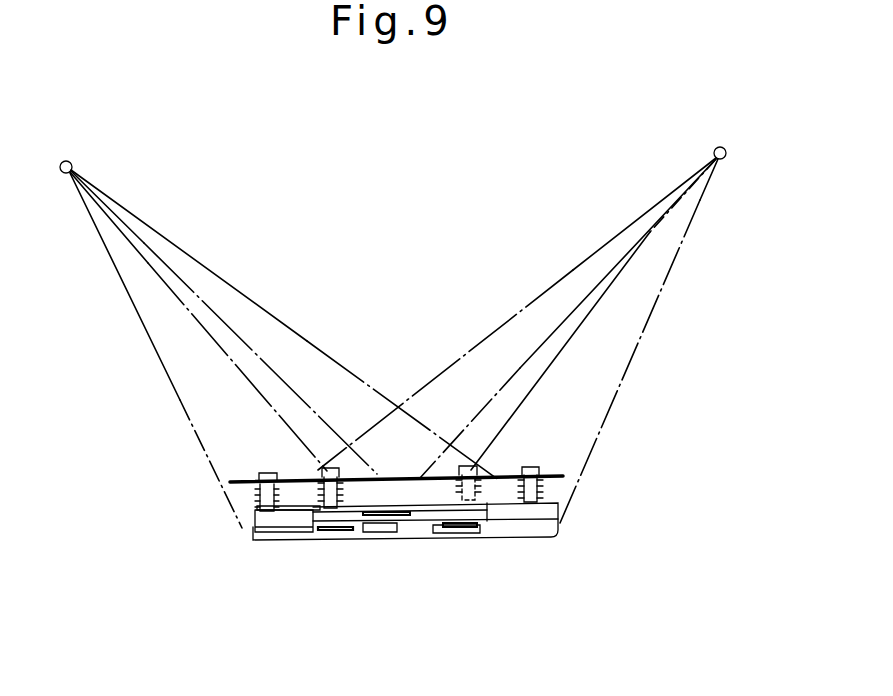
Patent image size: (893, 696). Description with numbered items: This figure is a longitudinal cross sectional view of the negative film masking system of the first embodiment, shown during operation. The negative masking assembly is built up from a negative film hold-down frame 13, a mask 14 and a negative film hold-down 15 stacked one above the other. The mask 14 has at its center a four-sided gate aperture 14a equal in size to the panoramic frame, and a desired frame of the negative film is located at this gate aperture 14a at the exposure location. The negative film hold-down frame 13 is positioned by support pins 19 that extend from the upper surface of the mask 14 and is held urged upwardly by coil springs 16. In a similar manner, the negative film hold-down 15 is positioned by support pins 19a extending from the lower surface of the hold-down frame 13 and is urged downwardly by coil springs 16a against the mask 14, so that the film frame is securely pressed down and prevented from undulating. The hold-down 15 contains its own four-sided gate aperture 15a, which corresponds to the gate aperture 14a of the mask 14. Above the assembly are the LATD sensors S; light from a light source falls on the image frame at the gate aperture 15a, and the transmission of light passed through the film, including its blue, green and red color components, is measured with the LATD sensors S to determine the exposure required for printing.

The LATD sensor S is at (72, 156).
The negative film hold-down frame 13 is at (562, 473).
The mask 14 is at (541, 528).
The four-sided gate aperture 14a is at (383, 514).
The negative film hold-down 15 is at (484, 522).
The four-sided gate aperture 15a is at (402, 516).
The coil spring 16 is at (257, 497).
The coil spring 16a is at (259, 523).
The support pin 19 is at (262, 503).
The support pin 19a is at (338, 450).